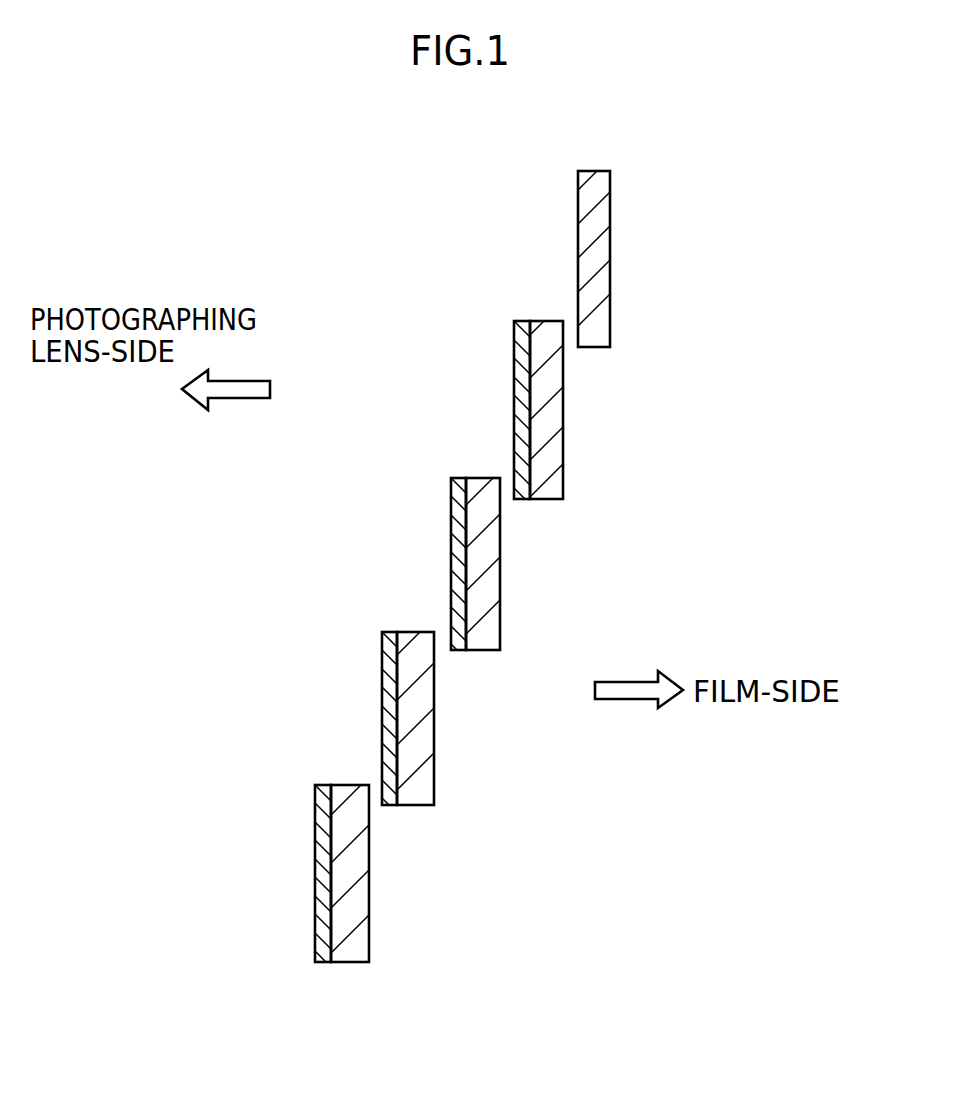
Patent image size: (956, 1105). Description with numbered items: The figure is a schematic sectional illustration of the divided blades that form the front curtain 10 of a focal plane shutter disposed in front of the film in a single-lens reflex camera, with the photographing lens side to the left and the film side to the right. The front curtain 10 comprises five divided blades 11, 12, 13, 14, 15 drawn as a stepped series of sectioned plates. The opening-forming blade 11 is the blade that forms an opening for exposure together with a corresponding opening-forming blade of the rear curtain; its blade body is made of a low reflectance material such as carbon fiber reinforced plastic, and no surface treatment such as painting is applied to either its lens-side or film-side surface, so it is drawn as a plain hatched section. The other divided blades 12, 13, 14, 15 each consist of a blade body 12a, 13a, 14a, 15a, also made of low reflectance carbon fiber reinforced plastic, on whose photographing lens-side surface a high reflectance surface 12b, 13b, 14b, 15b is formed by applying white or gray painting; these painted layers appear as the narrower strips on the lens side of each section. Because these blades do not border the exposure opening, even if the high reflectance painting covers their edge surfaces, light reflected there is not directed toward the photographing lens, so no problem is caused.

The front curtain 10 is at (356, 230).
The opening-forming blade 11 is at (597, 172).
The divided blade 12 is at (518, 300).
The blade body 12a is at (563, 425).
The high reflectance surface 12b is at (518, 385).
The divided blade 13 is at (477, 460).
The blade body 13a is at (493, 540).
The high reflectance surface 13b is at (453, 518).
The divided blade 14 is at (408, 618).
The blade body 14a is at (432, 730).
The high reflectance surface 14b is at (388, 678).
The divided blade 15 is at (330, 775).
The blade body 15a is at (363, 858).
The high reflectance surface 15b is at (320, 857).